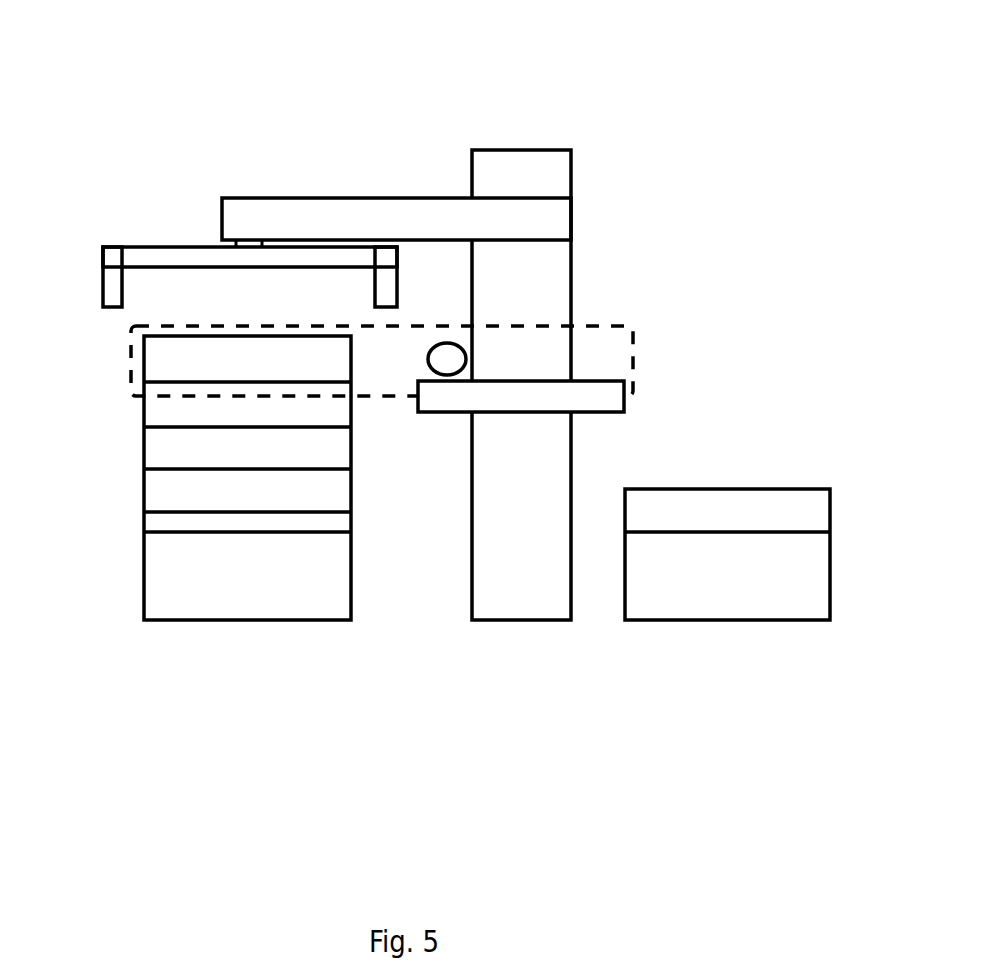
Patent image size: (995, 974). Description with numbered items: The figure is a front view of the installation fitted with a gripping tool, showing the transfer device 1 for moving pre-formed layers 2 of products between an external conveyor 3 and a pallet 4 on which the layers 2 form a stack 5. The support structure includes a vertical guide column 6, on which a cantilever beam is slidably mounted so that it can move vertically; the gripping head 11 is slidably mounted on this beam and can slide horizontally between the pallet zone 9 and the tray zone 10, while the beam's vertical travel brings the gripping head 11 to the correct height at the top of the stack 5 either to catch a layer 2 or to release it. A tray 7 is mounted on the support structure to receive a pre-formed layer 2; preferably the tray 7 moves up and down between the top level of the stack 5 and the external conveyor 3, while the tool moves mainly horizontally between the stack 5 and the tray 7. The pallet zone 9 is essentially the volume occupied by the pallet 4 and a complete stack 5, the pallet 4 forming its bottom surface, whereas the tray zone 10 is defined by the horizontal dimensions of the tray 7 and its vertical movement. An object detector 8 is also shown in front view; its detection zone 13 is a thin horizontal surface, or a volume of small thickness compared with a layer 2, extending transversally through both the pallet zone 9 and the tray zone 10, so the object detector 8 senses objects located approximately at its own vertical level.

The transfer device 1 is at (592, 103).
The layer 2 is at (147, 413).
The external conveyor 3 is at (760, 606).
The pallet 4 is at (174, 526).
The stack 5 is at (370, 503).
The vertical guide column 6 is at (502, 167).
The tray 7 is at (620, 382).
The object detector 8 is at (453, 357).
The pallet zone 9 is at (243, 677).
The tray zone 10 is at (508, 677).
The gripping head 11 is at (179, 224).
The detection zone 13 is at (621, 310).